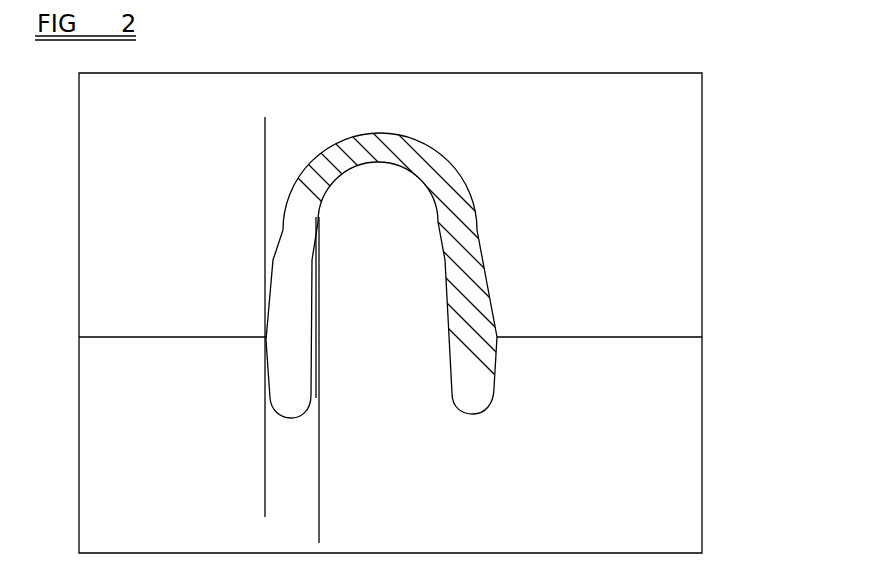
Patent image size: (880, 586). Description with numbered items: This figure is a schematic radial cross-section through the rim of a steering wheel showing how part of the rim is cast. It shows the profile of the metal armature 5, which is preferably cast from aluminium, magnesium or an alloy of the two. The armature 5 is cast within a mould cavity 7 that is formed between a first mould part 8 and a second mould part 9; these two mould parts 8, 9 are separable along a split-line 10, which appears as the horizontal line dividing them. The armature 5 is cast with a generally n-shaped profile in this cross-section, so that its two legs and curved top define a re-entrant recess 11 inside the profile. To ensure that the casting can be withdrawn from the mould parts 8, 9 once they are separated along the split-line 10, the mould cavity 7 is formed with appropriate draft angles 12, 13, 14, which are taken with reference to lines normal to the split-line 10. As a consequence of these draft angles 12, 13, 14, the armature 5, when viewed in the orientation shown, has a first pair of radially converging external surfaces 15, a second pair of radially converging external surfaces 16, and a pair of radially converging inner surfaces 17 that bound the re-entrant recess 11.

The metal armature 5 is at (432, 163).
The mould cavity 7 is at (405, 135).
The first mould part 8 is at (658, 407).
The second mould part 9 is at (675, 230).
The split-line 10 is at (633, 337).
The re-entrant recess 11 is at (377, 227).
The draft angle 12 is at (320, 428).
The draft angle 13 is at (265, 395).
The draft angle 14 is at (266, 257).
The first pair of radially converging external surfaces 15 is at (268, 372).
The second pair of radially converging external surfaces 16 is at (481, 232).
The pair of radially converging inner surfaces 17 is at (445, 282).